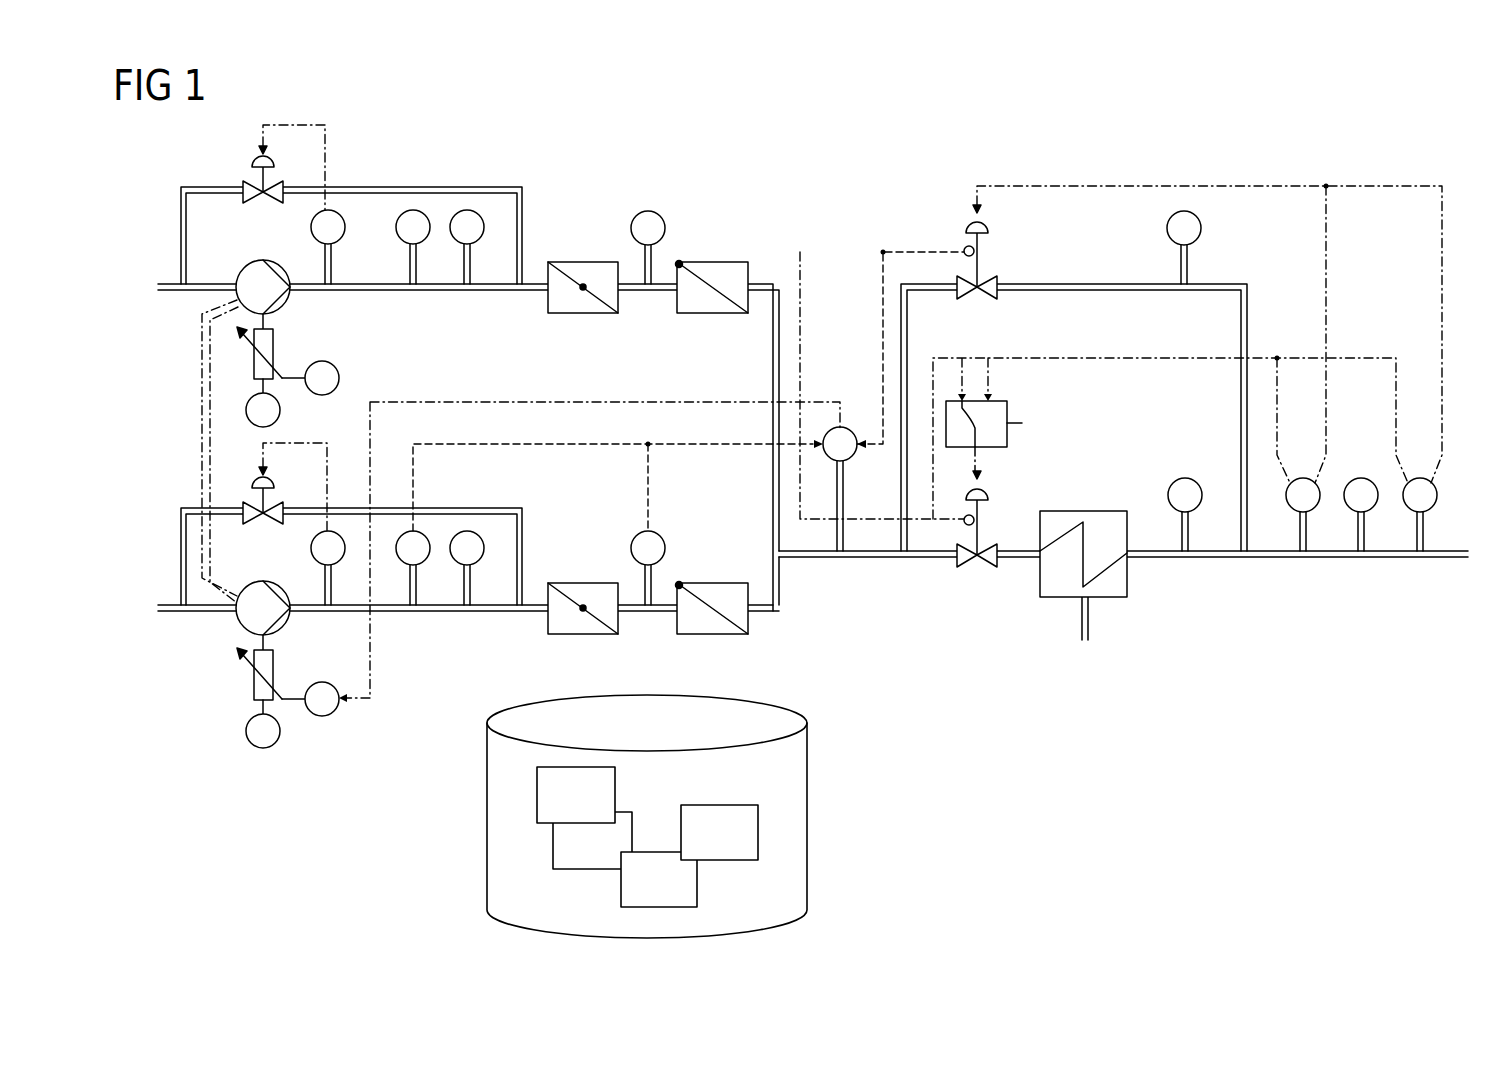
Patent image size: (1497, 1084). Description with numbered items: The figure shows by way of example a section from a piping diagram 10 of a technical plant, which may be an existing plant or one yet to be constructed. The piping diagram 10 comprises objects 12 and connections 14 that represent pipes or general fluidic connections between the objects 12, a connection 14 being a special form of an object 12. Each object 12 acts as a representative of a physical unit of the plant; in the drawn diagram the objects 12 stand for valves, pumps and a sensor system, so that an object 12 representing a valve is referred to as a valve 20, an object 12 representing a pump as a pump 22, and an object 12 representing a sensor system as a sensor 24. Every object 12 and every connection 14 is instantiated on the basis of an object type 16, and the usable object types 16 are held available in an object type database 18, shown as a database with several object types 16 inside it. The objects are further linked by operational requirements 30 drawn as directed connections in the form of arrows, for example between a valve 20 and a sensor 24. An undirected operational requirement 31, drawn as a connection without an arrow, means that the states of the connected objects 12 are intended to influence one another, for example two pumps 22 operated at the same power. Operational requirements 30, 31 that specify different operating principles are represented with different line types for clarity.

The piping diagram 10 is at (960, 160).
The object 12 is at (311, 227).
The connection 14 is at (441, 187).
The object type 16 is at (582, 856).
The object type database 18 is at (808, 822).
The valve 20 is at (243, 188).
The pump 22 is at (238, 276).
The sensor 24 is at (648, 211).
The operational requirement 30 is at (326, 138).
The undirected operational requirement 31 is at (210, 385).